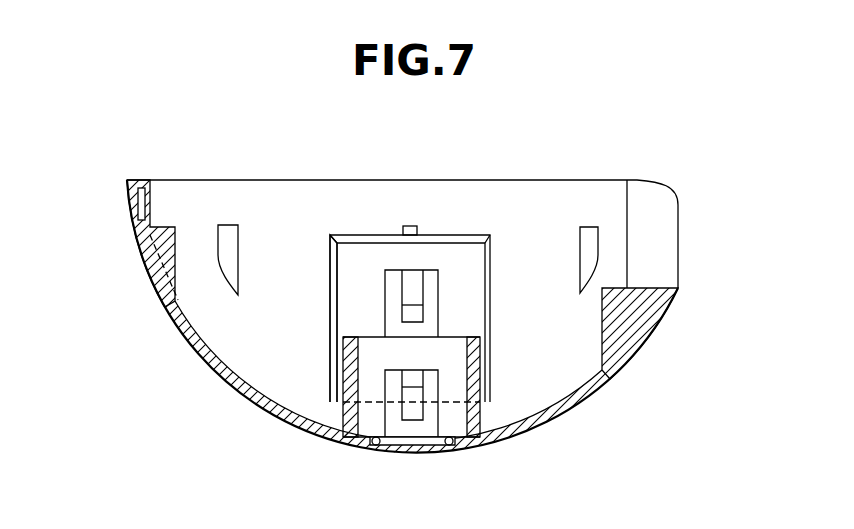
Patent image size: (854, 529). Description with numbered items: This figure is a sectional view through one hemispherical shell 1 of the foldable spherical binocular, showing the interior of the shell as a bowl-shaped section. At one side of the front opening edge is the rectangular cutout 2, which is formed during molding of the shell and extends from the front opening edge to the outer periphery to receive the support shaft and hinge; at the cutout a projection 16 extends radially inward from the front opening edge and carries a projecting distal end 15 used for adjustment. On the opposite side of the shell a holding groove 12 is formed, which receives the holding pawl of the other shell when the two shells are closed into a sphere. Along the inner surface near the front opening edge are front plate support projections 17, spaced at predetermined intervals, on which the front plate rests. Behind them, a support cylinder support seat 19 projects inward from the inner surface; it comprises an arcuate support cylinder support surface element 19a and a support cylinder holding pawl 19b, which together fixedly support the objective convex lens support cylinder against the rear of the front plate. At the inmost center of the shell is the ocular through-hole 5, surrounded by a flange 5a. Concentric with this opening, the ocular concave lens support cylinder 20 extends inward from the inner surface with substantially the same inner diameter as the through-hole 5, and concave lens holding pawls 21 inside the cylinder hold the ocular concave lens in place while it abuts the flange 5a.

The hemispherical shell 1 is at (207, 373).
The rectangular cutout 2 is at (650, 197).
The ocular through-hole 5 is at (378, 447).
The flange 5a is at (450, 443).
The holding groove 12 is at (150, 200).
The projecting distal end 15 is at (640, 283).
The projection 16 is at (603, 330).
The front plate support projection 17 is at (227, 230).
The support cylinder support seat 19 is at (383, 240).
The support cylinder support surface element 19a is at (342, 265).
The support cylinder holding pawl 19b is at (417, 317).
The ocular concave lens support cylinder 20 is at (477, 417).
The concave lens holding pawl 21 is at (412, 412).